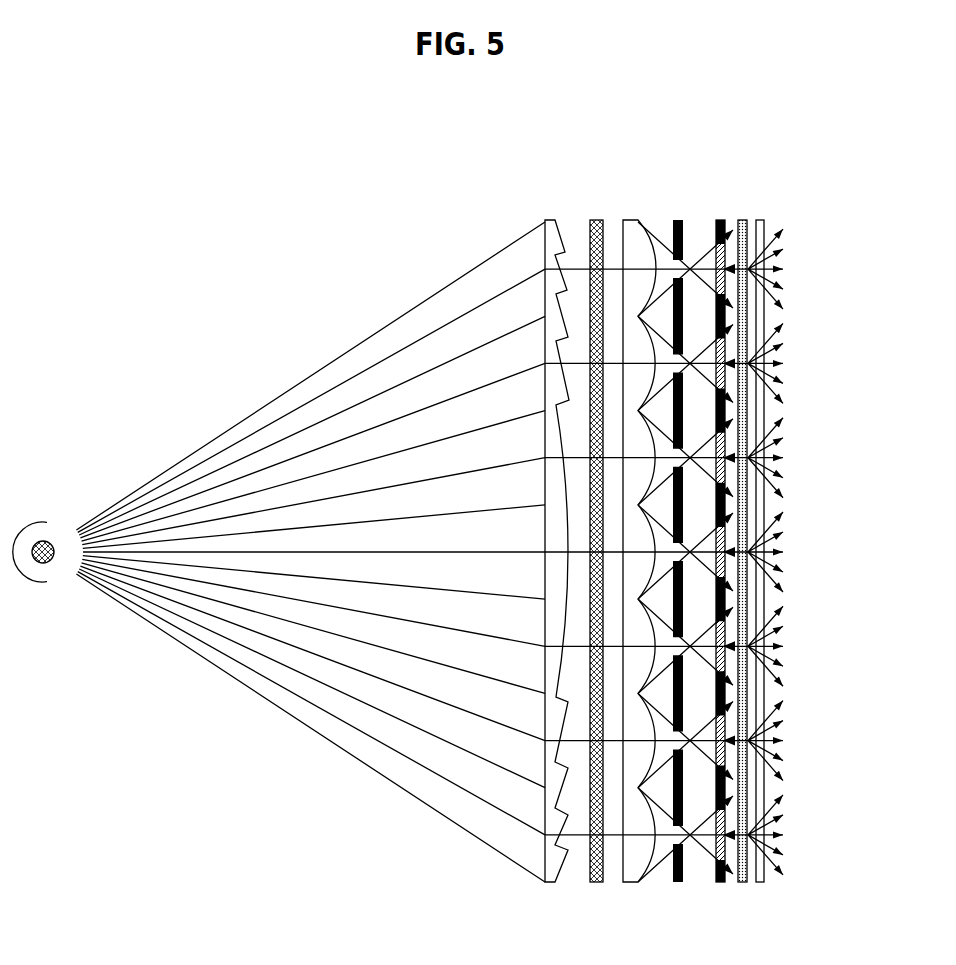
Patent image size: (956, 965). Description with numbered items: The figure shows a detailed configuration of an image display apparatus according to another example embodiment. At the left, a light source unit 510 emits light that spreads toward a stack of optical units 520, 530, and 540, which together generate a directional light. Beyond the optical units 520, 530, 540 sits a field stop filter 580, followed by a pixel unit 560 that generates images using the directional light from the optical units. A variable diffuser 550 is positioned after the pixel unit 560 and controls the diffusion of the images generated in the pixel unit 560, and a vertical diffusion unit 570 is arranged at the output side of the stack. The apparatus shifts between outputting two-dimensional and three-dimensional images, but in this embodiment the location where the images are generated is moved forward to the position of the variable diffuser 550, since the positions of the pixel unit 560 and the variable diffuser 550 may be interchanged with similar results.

The light source unit 510 is at (47, 522).
The optical unit 520 is at (550, 246).
The optical unit 530 is at (590, 238).
The optical unit 540 is at (637, 237).
The field stop filter 580 is at (675, 220).
The pixel unit 560 is at (717, 220).
The variable diffuser 550 is at (744, 220).
The vertical diffusion unit 570 is at (762, 220).